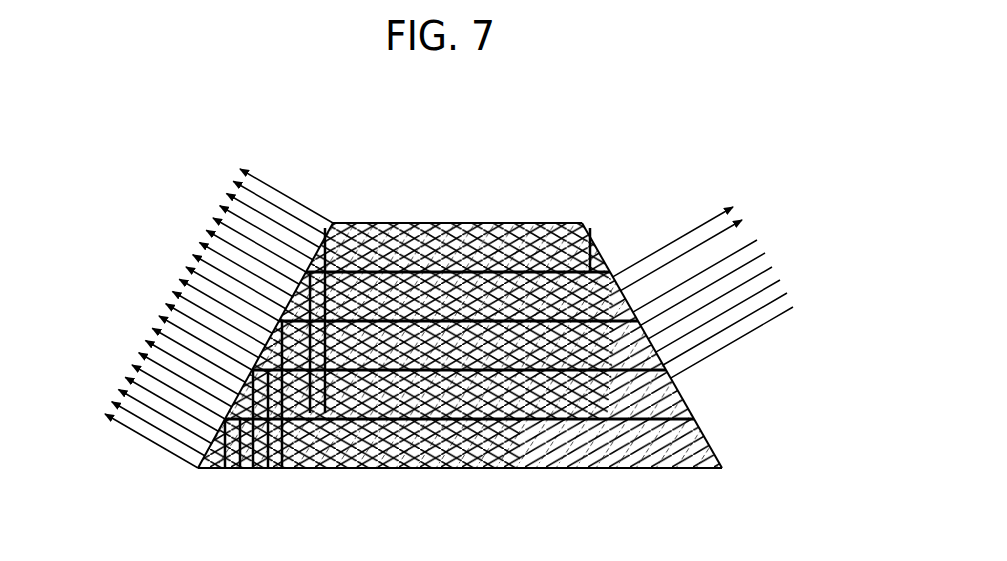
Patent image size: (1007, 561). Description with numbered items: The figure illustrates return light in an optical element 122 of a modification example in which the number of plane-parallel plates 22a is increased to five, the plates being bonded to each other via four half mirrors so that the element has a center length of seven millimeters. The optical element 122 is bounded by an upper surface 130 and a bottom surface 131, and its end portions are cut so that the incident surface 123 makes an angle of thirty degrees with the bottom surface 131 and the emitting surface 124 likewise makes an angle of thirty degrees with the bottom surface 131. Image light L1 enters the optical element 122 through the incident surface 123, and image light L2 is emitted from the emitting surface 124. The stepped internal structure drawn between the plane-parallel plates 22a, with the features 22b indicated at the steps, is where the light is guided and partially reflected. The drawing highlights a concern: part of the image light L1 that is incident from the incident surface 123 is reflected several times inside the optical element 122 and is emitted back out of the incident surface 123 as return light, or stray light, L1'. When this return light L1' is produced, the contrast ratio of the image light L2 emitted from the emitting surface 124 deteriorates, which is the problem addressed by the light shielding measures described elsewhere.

The optical element 122 is at (504, 311).
The incident surface 123 is at (592, 225).
The emitting surface 124 is at (329, 226).
The upper surface 130 is at (469, 223).
The bottom surface 131 is at (586, 470).
The plane-parallel plate 22a is at (592, 268).
The vertical reflecting surfaces 22b is at (505, 250).
The image light L1 is at (729, 309).
The return light L1' is at (677, 217).
The image light L2 is at (298, 190).